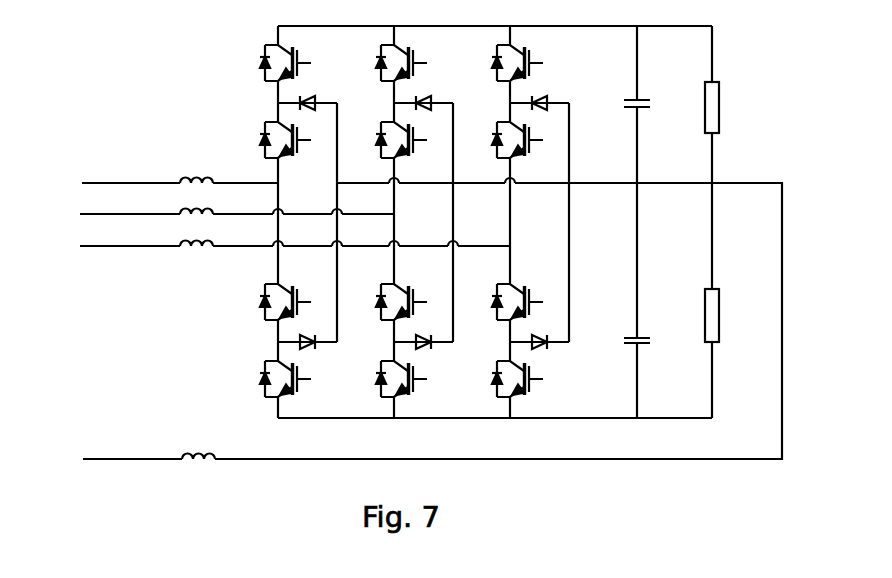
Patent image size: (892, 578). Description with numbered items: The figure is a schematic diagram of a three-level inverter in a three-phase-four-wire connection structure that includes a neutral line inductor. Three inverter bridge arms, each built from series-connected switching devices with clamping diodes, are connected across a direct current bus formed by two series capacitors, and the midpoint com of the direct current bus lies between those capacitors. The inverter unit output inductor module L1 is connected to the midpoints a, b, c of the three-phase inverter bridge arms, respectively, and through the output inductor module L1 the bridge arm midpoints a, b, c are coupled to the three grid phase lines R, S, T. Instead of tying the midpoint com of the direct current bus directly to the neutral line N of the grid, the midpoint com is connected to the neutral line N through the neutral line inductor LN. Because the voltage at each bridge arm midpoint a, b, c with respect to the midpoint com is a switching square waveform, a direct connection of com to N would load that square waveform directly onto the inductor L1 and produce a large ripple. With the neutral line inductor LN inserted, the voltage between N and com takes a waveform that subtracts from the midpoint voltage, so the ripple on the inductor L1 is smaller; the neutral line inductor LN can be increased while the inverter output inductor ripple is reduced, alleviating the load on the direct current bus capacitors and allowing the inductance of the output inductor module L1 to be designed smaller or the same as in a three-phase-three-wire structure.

The inverter unit output inductor module L1 is at (196, 191).
The neutral line inductor LN is at (198, 435).
The midpoint of the three-phase inverter bridge arm a is at (298, 222).
The midpoint of the three-phase inverter bridge arm b is at (414, 222).
The midpoint of the three-phase inverter bridge arm c is at (530, 222).
The grid phase line R is at (168, 163).
The grid phase line S is at (227, 212).
The grid phase line T is at (284, 260).
The neutral line of the grid N is at (124, 441).
The midpoint of the direct current bus com is at (498, 302).